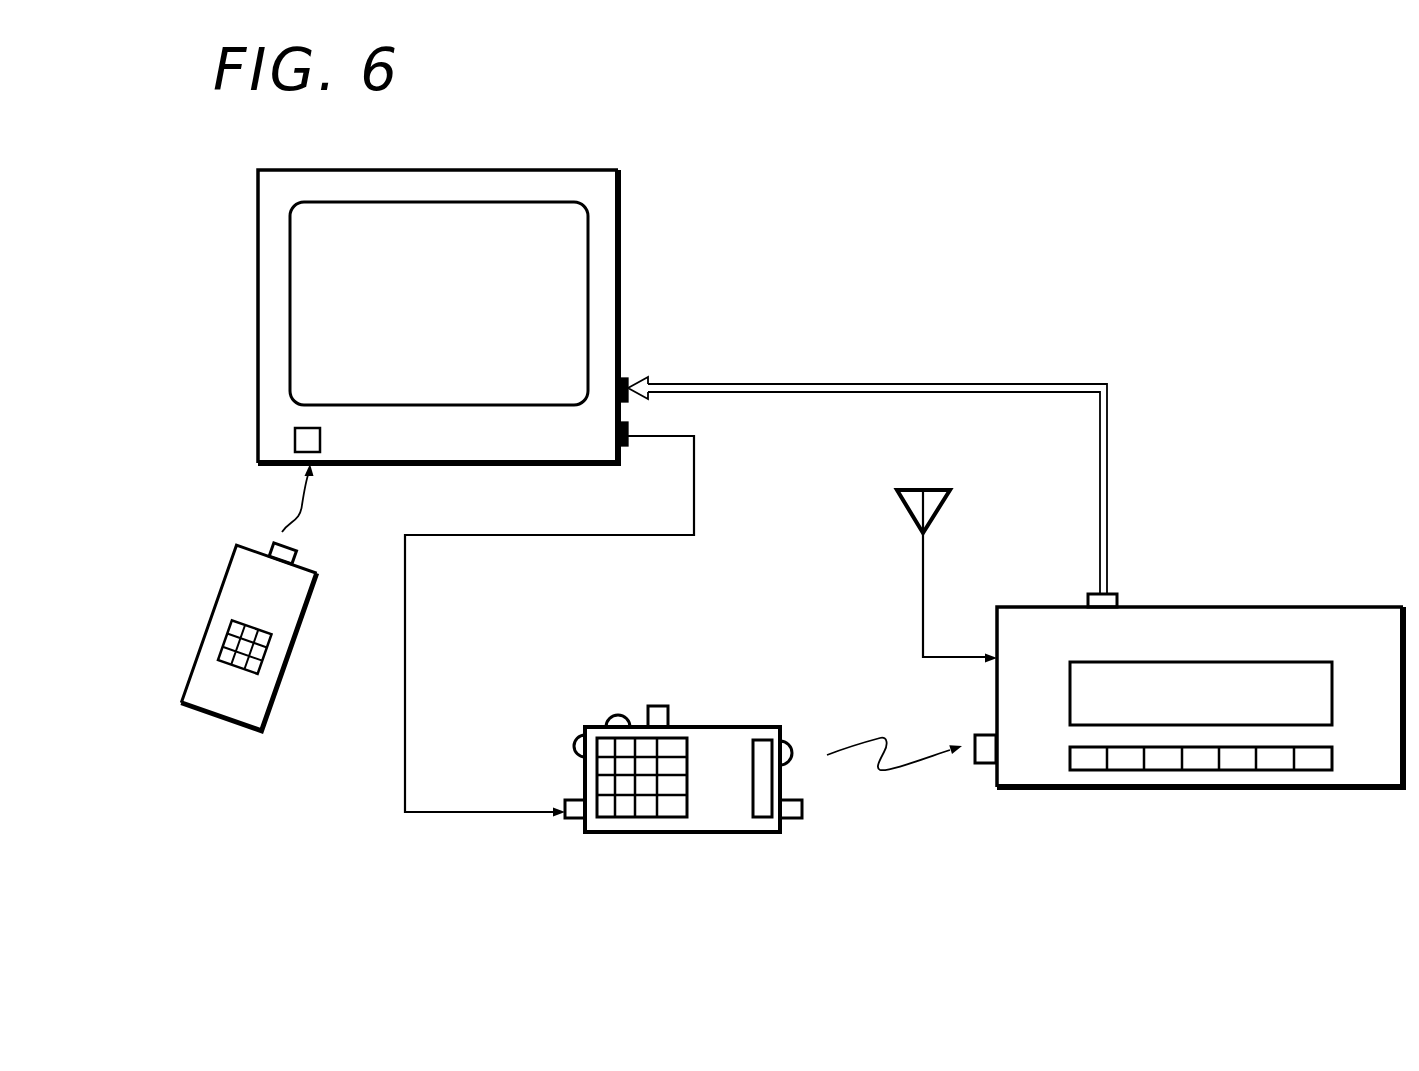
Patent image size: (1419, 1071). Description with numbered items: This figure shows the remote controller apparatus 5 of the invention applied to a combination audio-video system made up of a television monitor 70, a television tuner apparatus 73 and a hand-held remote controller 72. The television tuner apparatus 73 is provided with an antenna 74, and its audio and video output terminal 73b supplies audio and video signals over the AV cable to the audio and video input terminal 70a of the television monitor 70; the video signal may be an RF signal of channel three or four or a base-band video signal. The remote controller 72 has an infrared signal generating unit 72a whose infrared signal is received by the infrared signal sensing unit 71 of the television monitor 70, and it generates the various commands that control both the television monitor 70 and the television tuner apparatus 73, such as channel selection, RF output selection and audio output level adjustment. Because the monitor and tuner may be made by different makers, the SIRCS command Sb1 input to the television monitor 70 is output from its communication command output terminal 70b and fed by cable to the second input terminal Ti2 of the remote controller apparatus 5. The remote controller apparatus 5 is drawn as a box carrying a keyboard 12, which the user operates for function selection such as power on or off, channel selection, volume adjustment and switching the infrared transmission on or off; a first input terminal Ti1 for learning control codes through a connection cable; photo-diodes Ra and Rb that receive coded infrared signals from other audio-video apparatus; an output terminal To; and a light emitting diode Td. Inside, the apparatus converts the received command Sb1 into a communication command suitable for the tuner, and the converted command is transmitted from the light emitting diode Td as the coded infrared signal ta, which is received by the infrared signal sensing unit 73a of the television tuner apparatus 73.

The television monitor 70 is at (530, 163).
The audio and video input terminal 70a is at (627, 378).
The communication command output terminal 70b is at (629, 446).
The infrared signal sensing unit 71 is at (296, 443).
The remote controller 72 is at (233, 597).
The infrared signal generating unit 72a is at (286, 548).
The television tuner apparatus 73 is at (1286, 599).
The infrared signal sensing unit 73a is at (984, 764).
The audio and video output terminal 73b is at (1113, 596).
The antenna 74 is at (924, 577).
The remote controller apparatus 5 is at (745, 719).
The keyboard 12 is at (694, 793).
The audio/video signal cable AV is at (1108, 462).
The code signal Sb1 is at (404, 727).
The coded infrared signal ta is at (894, 764).
The photo-diode Ra is at (617, 717).
The photo-diode Rb is at (575, 740).
The first input terminal Ti1 is at (661, 711).
The second input terminal Ti2 is at (574, 820).
The light emitting diode Td is at (790, 750).
The output terminal To is at (795, 820).